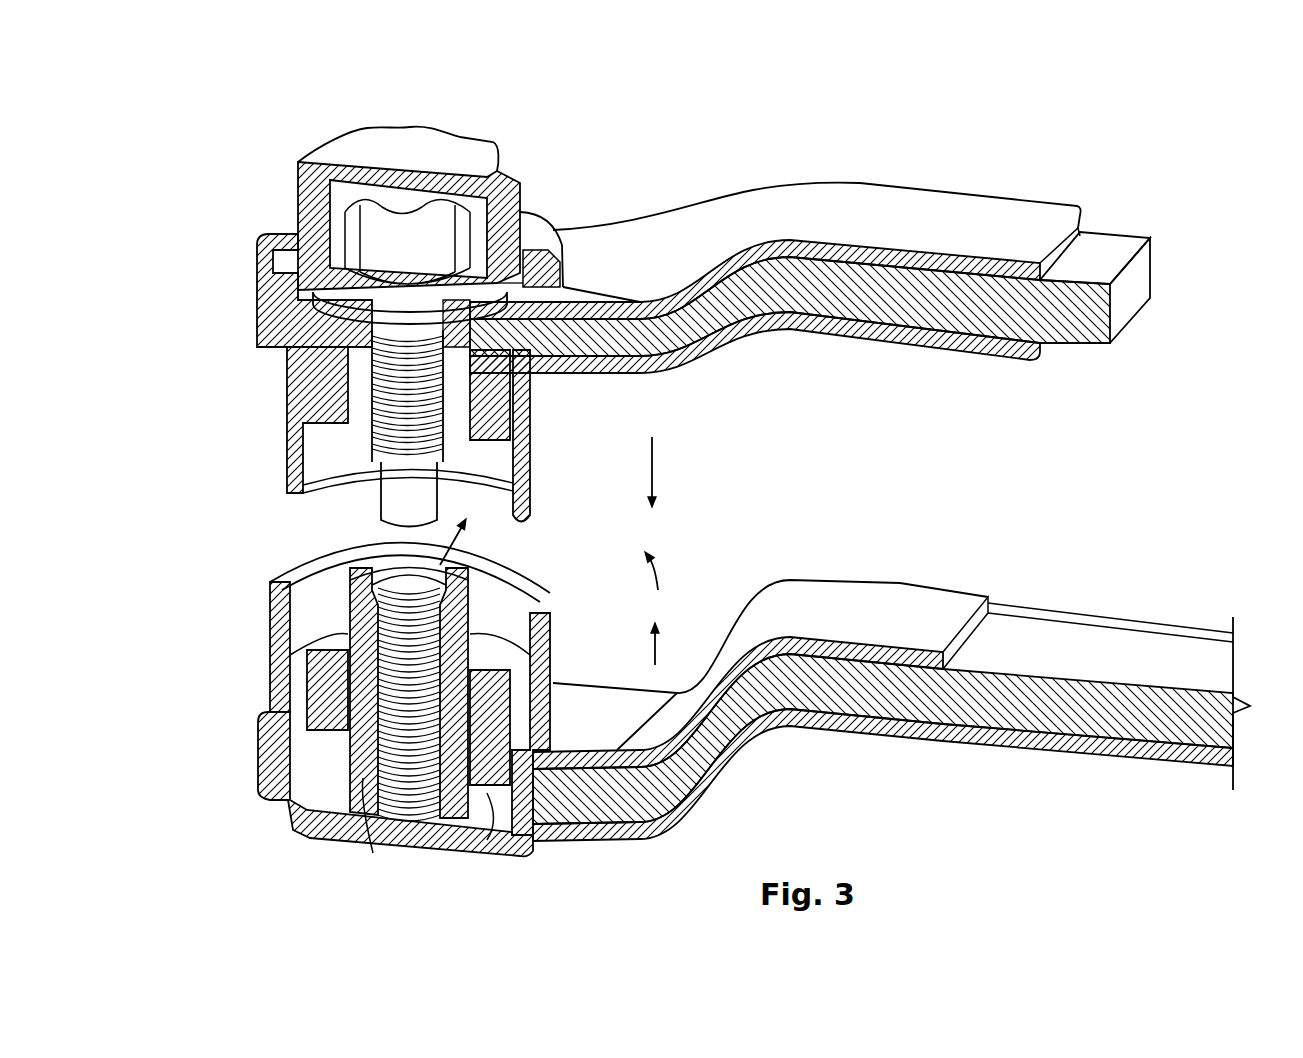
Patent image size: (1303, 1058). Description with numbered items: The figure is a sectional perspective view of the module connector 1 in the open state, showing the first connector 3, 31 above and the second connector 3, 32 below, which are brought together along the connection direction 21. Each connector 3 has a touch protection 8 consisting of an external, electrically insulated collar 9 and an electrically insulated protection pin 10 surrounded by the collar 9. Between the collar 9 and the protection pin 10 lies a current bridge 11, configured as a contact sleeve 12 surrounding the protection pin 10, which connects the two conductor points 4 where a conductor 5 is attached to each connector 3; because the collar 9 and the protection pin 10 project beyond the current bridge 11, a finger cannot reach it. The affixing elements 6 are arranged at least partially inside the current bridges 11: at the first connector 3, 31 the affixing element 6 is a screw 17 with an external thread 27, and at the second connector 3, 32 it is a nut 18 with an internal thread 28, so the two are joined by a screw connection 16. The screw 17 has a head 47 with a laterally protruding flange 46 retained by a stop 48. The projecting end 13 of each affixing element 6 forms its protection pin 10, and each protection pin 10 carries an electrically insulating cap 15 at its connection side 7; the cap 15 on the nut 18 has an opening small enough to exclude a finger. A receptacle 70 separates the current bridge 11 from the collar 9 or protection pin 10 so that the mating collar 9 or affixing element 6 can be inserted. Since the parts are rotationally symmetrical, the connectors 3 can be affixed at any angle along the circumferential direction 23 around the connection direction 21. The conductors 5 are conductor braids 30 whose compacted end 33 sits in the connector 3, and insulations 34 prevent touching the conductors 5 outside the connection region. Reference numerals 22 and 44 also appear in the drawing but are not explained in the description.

The module connector 1 is at (205, 112).
The connector 3 is at (550, 219).
The conductor point 4 is at (251, 298).
The conductor 5 is at (1085, 328).
The affixing element 6 is at (400, 410).
The connection side 7 is at (530, 528).
The touch protection 8 is at (223, 568).
The collar 9 is at (520, 455).
The protection pin 10 is at (408, 522).
The current bridge 11 is at (497, 418).
The contact sleeve 12 is at (322, 352).
The projecting end 13 is at (525, 500).
The cap 15 is at (466, 570).
The screw connection 16 is at (197, 472).
The screw 17 is at (405, 395).
The nut 18 is at (368, 672).
The connection direction 21 is at (652, 470).
The insertion direction 22 is at (457, 523).
The circumferential direction 23 is at (660, 565).
The external thread 27 is at (440, 455).
The internal thread 28 is at (397, 803).
The conductor braid 30 is at (1116, 255).
The first connector 31 is at (590, 230).
The second connector 32 is at (213, 761).
The end of the conductor braid 33 is at (600, 303).
The insulation 34 is at (906, 205).
The weld seam 44 is at (363, 778).
The flange 46 is at (280, 265).
The head 47 is at (322, 300).
The stop 48 is at (298, 238).
The receptacle 70 is at (485, 378).